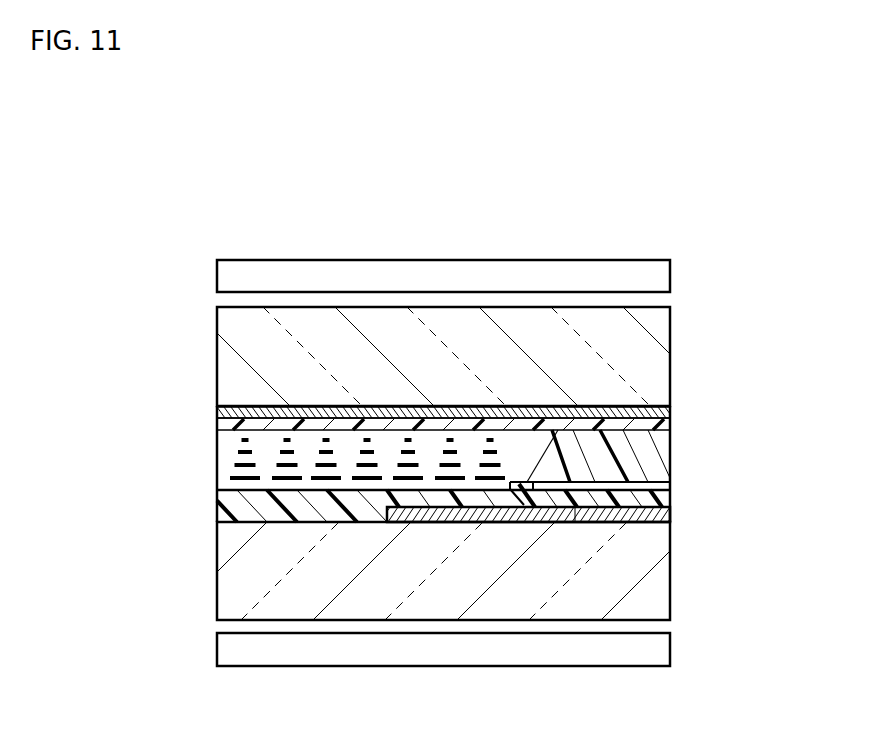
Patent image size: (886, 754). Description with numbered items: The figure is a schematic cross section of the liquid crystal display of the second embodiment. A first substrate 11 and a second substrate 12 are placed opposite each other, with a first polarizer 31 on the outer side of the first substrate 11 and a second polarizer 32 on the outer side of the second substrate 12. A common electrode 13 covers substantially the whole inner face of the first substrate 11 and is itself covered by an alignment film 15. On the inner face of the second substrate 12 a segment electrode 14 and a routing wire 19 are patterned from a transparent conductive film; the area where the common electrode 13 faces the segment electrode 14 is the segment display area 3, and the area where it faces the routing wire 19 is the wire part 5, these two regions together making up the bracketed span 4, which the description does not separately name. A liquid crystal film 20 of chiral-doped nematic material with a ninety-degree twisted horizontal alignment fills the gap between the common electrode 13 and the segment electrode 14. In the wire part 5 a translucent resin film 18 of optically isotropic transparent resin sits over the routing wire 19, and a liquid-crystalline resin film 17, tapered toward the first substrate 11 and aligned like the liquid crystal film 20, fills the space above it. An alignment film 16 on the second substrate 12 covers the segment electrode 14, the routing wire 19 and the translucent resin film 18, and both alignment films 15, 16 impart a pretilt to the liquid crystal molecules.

The segment display area 3 is at (527, 482).
The pixel region 4 is at (670, 260).
The wire part 5 is at (530, 180).
The first substrate 11 is at (672, 371).
The second substrate 12 is at (672, 578).
The common electrode 13 is at (672, 412).
The segment electrode 14 is at (458, 514).
The alignment film 15 is at (217, 424).
The alignment film 16 is at (217, 500).
The liquid-crystalline resin film 17 is at (640, 460).
The translucent resin film 18 is at (672, 500).
The routing wire 19 is at (585, 512).
The liquid crystal film 20 is at (227, 458).
The first polarizer 31 is at (672, 282).
The second polarizer 32 is at (672, 658).